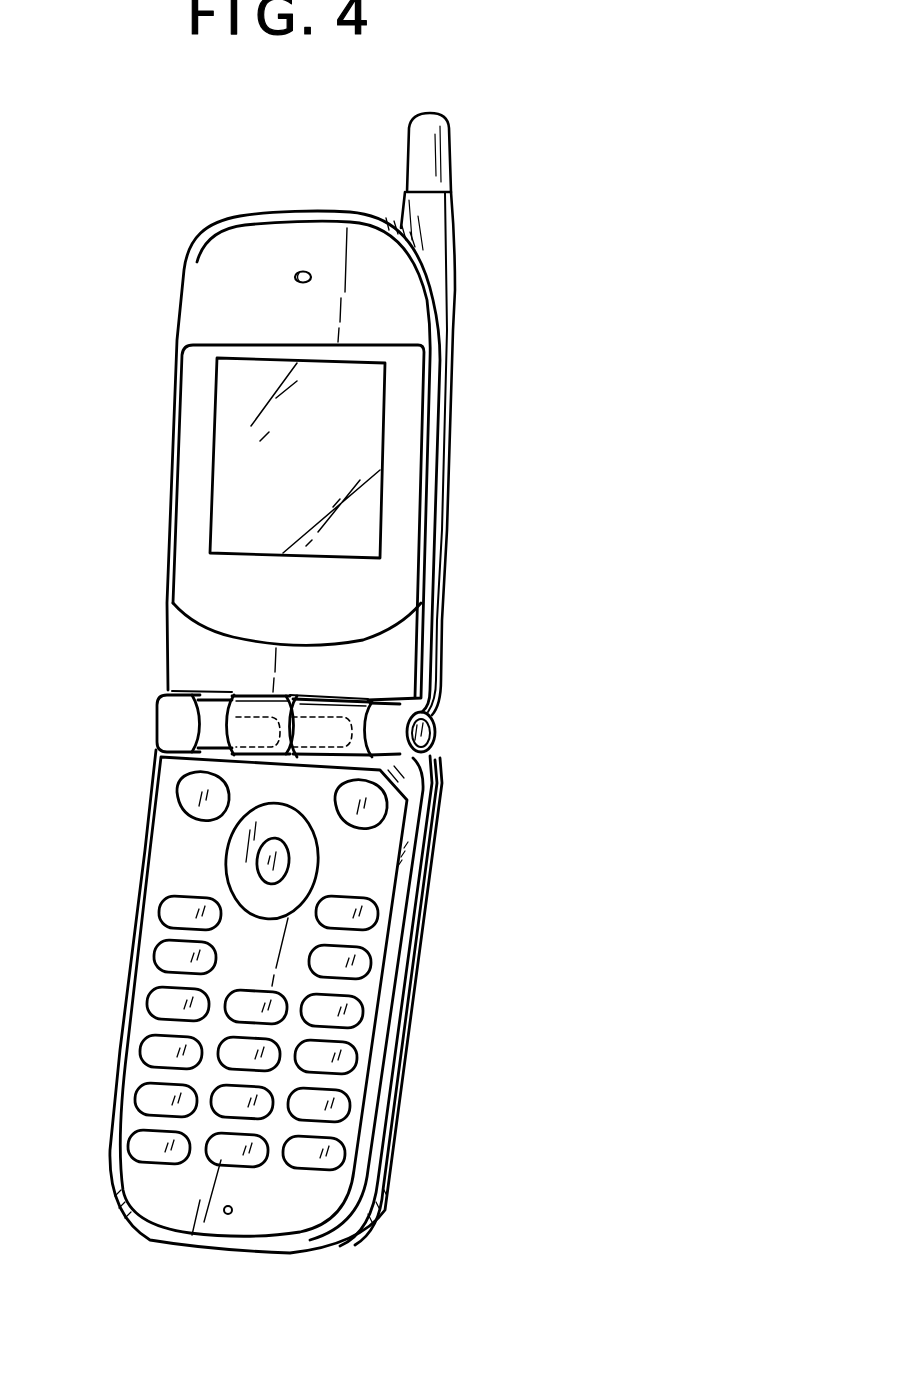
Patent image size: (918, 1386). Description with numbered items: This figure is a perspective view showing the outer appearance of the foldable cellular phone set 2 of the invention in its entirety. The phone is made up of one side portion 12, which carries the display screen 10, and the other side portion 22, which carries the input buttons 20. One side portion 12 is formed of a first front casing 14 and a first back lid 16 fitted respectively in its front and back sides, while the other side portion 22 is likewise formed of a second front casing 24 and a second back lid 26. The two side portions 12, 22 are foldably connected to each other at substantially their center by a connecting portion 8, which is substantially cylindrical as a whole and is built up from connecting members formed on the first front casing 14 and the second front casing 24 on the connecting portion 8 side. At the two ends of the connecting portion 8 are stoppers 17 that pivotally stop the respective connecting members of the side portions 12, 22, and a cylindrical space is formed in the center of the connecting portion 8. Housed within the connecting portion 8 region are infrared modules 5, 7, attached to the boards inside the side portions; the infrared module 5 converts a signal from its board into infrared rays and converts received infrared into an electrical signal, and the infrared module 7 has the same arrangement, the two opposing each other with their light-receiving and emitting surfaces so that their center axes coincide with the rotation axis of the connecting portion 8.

The foldable cellular phone set 2 is at (549, 245).
The infrared module 5 is at (320, 720).
The infrared module 7 is at (257, 723).
The connecting portion 8 is at (158, 727).
The display screen 10 is at (240, 466).
The one side portion 12 is at (475, 541).
The first front casing 14 is at (208, 304).
The first back lid 16 is at (443, 658).
The stopper 17 is at (433, 728).
The input buttons 20 is at (163, 1003).
The other side portion 22 is at (439, 948).
The second front casing 24 is at (172, 870).
The second back lid 26 is at (391, 1153).